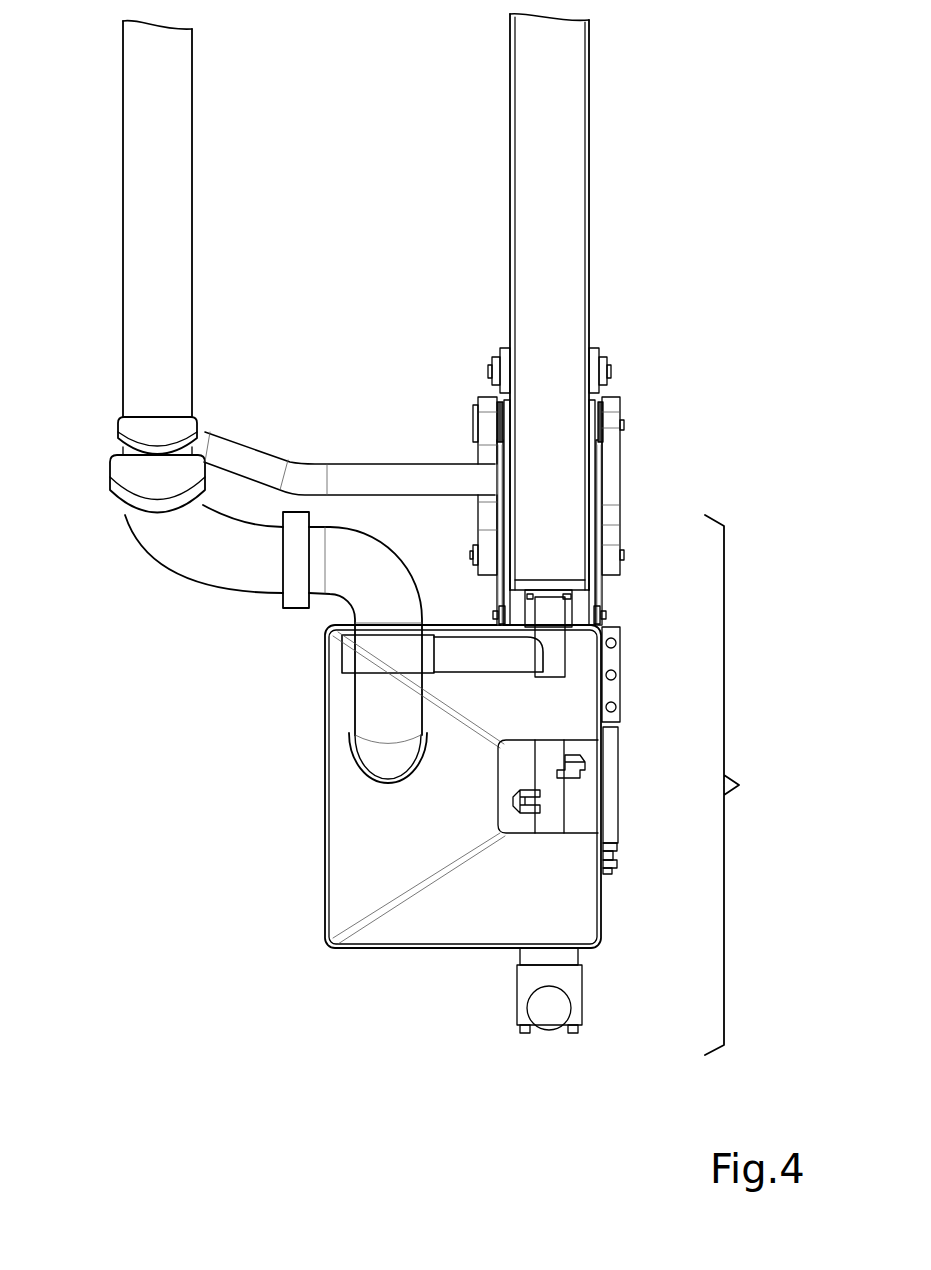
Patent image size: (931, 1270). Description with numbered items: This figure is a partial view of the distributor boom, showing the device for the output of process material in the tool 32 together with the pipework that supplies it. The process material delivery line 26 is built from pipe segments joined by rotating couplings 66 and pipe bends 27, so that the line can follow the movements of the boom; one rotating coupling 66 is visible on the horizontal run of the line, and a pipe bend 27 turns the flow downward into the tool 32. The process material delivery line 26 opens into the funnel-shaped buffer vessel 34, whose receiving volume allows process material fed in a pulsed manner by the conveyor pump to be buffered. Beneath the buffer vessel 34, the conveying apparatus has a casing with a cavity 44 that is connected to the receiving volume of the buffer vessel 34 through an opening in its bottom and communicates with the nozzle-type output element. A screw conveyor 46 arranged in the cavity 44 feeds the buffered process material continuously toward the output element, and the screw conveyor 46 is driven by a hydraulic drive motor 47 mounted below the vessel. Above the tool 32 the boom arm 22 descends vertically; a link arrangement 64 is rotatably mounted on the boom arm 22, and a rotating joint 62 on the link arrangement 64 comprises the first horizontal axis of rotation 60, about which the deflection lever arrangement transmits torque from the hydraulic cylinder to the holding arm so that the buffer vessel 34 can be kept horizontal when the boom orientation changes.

The boom arm 22 is at (545, 211).
The process material delivery line 26 is at (160, 177).
The pipe bend 27 is at (215, 586).
The tool 32 is at (741, 785).
The buffer vessel 34 is at (325, 785).
The cavity 44 is at (593, 760).
The screw conveyor 46 is at (555, 803).
The hydraulic drive motor 47 is at (582, 996).
The first horizontal axis of rotation 60 is at (445, 548).
The rotating joint 62 is at (598, 556).
The link arrangement 64 is at (612, 434).
The rotating coupling 66 is at (294, 600).